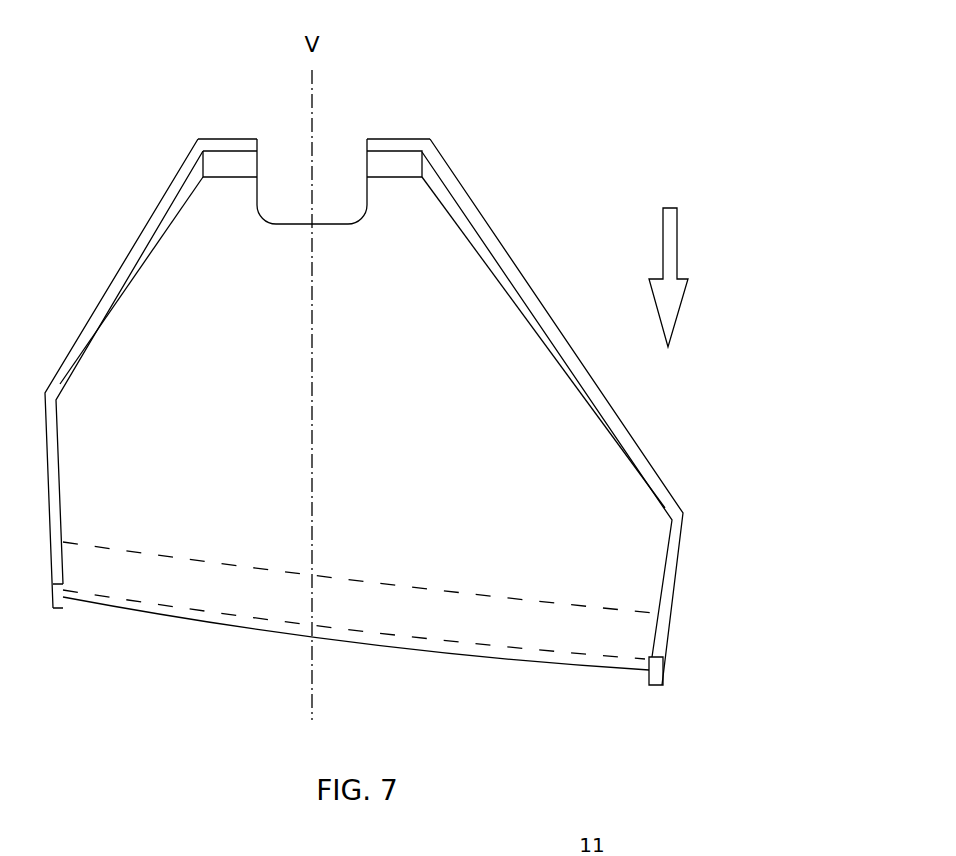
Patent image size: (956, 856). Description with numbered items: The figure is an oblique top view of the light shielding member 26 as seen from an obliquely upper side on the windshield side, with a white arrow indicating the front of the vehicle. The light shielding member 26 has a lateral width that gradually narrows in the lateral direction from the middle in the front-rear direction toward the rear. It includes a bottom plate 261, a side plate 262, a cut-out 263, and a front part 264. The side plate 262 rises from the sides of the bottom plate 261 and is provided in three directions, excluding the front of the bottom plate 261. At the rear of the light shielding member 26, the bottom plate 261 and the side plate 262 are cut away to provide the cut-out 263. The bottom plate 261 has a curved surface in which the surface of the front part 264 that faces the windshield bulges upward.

The light shielding member 26 is at (364, 392).
The bottom plate 261 is at (394, 503).
The side plate 262 is at (232, 167).
The cut-out 263 is at (288, 178).
The front part 264 is at (178, 577).